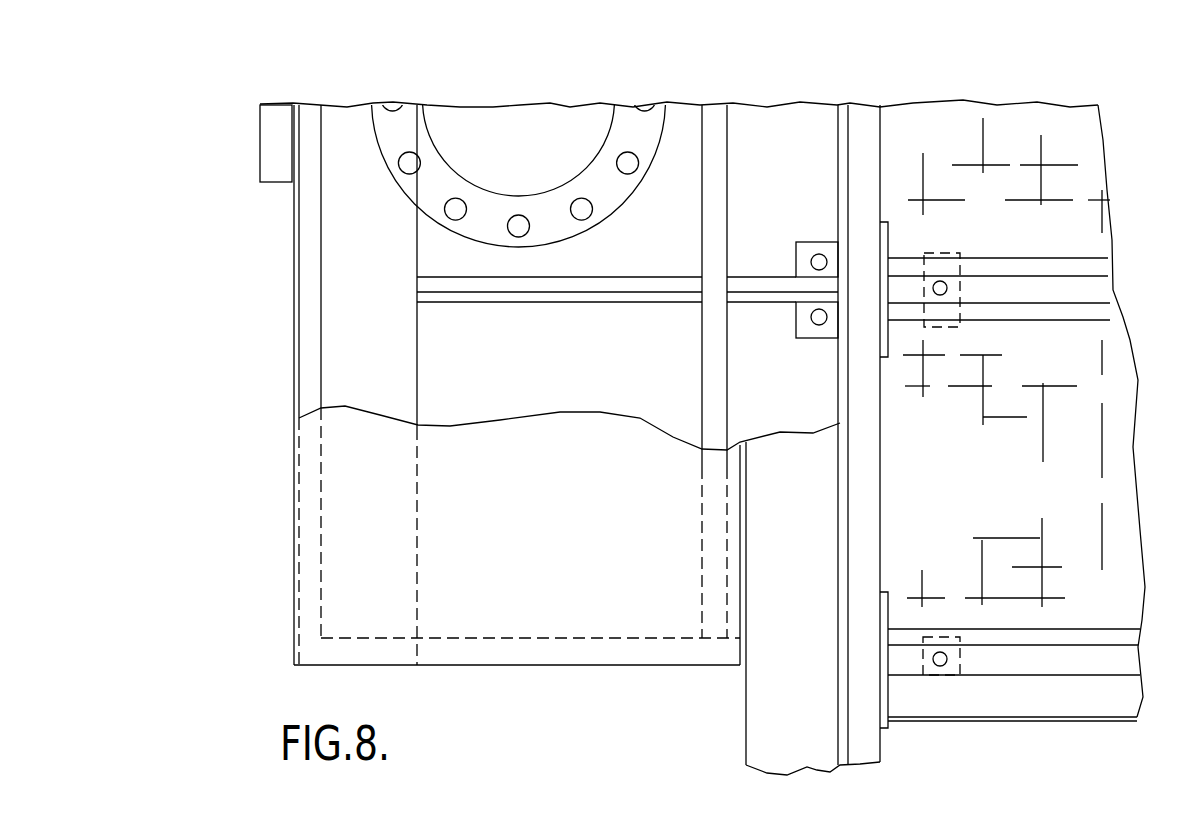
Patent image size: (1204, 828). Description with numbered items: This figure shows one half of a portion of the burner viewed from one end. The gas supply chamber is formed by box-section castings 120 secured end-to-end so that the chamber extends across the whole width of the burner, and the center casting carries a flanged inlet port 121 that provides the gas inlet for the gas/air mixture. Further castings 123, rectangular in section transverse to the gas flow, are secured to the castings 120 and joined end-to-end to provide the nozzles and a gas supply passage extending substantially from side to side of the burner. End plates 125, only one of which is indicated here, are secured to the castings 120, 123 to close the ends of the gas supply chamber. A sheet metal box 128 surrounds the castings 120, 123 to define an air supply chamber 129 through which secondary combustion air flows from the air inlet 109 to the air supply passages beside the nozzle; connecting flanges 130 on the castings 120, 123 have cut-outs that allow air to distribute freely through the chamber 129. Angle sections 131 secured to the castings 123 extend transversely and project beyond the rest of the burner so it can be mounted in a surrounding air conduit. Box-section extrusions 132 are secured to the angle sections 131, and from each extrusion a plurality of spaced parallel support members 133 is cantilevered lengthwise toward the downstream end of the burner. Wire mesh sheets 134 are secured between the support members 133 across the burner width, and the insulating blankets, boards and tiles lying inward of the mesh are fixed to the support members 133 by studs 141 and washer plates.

The air inlet 109 is at (258, 129).
The box-section castings 120 is at (668, 146).
The flanged inlet port 121 is at (402, 138).
The further castings 123 is at (797, 147).
The end plates 125 is at (592, 648).
The sheet metal box 128 is at (352, 508).
The air supply chamber 129 is at (350, 272).
The connecting flanges 130 is at (710, 348).
The angle sections 131 is at (772, 672).
The box-section extrusions 132 is at (864, 702).
The support members 133 is at (1088, 287).
The wire mesh sheets 134 is at (1083, 178).
The studs 141 is at (947, 293).